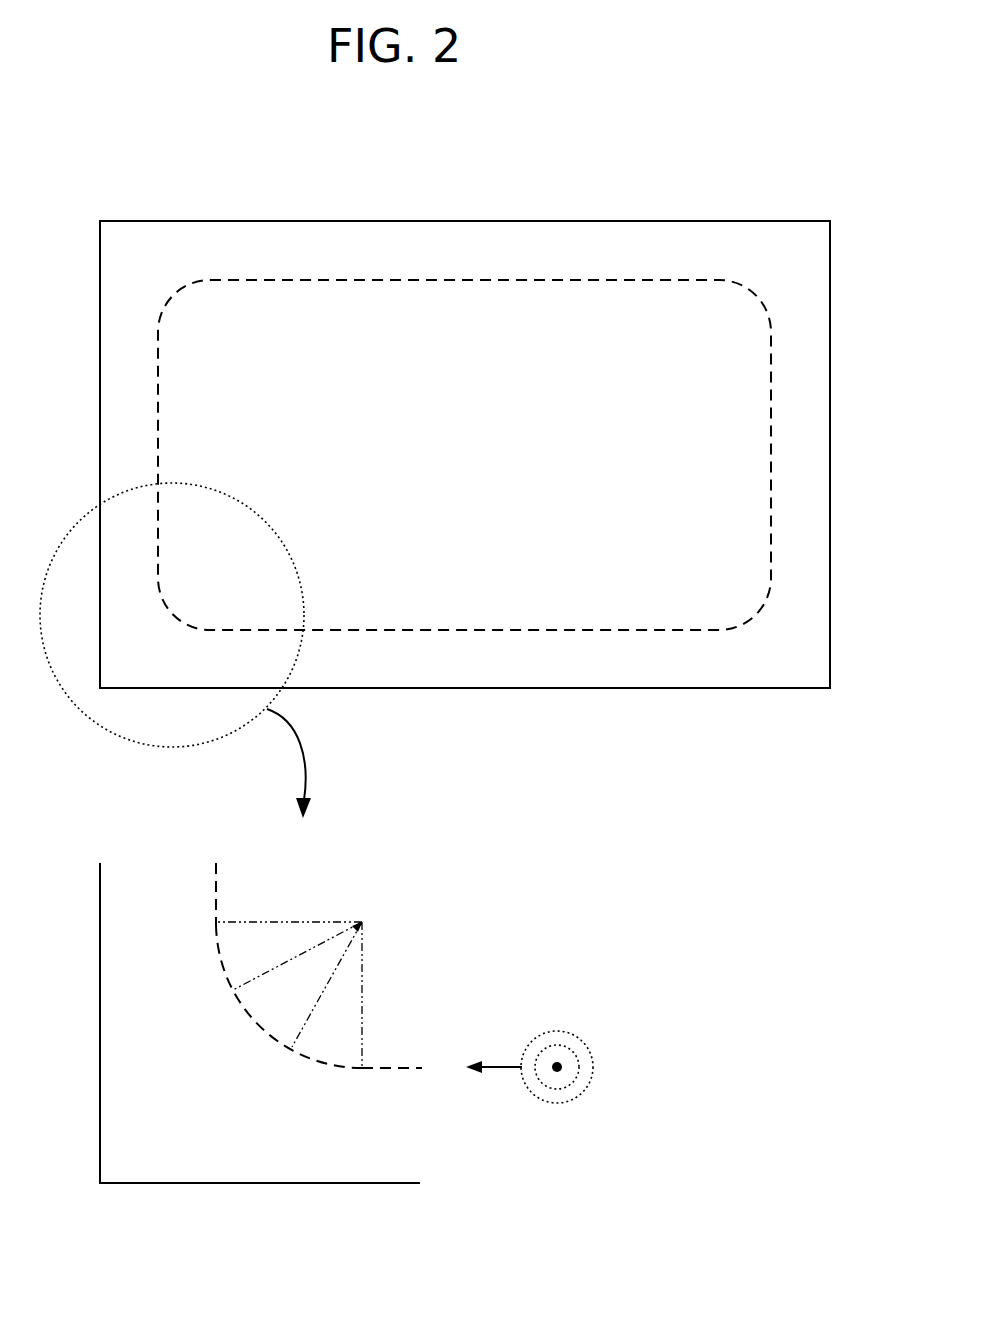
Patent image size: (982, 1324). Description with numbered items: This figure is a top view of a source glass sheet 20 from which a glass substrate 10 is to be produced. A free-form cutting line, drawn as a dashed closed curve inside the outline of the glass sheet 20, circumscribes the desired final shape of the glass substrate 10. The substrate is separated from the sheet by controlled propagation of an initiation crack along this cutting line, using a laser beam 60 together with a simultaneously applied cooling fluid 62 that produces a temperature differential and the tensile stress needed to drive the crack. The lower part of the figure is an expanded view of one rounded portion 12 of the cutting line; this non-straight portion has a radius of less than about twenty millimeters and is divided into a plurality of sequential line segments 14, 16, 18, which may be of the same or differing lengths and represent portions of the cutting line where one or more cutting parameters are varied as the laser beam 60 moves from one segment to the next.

The glass substrate 10 is at (391, 280).
The source glass sheet 20 is at (624, 221).
The rounded portion 12 is at (187, 600).
The line segment 14 is at (218, 957).
The line segment 16 is at (255, 1028).
The line segment 18 is at (338, 1067).
The laser beam 60 is at (557, 1067).
The cooling fluid 62 is at (583, 1092).